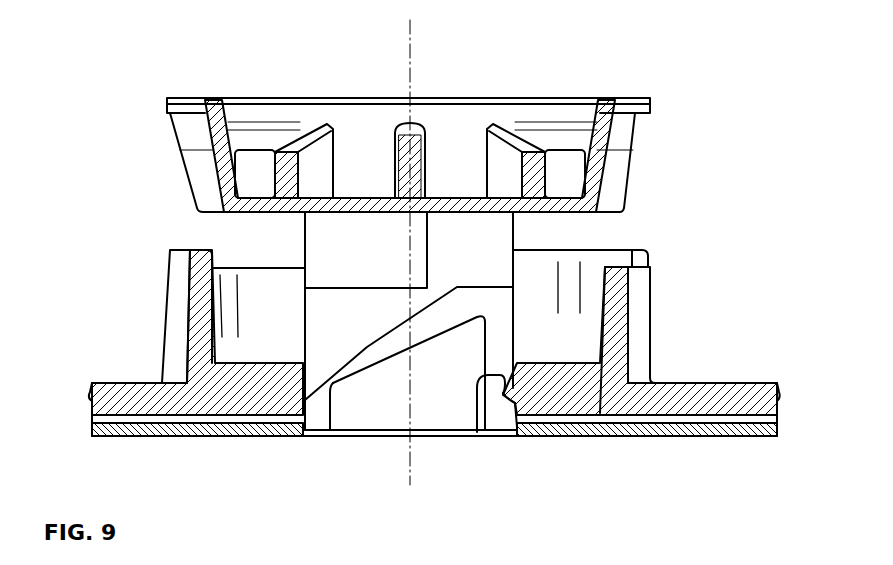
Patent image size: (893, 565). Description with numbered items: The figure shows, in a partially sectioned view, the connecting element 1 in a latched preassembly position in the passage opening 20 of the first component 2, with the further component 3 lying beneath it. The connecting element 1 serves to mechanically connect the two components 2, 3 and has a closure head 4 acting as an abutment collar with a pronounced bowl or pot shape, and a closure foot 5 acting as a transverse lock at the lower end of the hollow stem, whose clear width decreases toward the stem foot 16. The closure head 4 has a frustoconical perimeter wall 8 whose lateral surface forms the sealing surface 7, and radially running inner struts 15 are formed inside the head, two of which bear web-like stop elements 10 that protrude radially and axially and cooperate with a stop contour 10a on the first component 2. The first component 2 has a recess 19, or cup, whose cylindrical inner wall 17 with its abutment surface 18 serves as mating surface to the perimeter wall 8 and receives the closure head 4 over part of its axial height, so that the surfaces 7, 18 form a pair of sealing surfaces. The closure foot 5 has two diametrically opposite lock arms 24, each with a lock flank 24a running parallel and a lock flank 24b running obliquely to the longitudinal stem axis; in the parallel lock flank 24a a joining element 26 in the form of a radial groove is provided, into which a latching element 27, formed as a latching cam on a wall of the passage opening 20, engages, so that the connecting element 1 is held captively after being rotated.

The connecting element 1 is at (303, 98).
The first component 2 is at (117, 397).
The further component 3 is at (740, 427).
The closure head 4 is at (246, 99).
The closure foot 5 is at (426, 330).
The sealing surface 7 is at (633, 166).
The perimeter wall 8 is at (215, 142).
The stop element 10 is at (650, 108).
The stop contour 10a is at (643, 260).
The inner strut 15 is at (497, 152).
The stem foot 16 is at (485, 255).
The inner wall 17 is at (206, 328).
The abutment surface 18 is at (590, 294).
The recess 19 is at (252, 277).
The passage opening 20 is at (507, 396).
The lock arm 24 is at (367, 365).
The lock flank 24a is at (505, 326).
The lock flank 24b is at (367, 365).
The joining element 26 is at (490, 373).
The latching element 27 is at (512, 385).